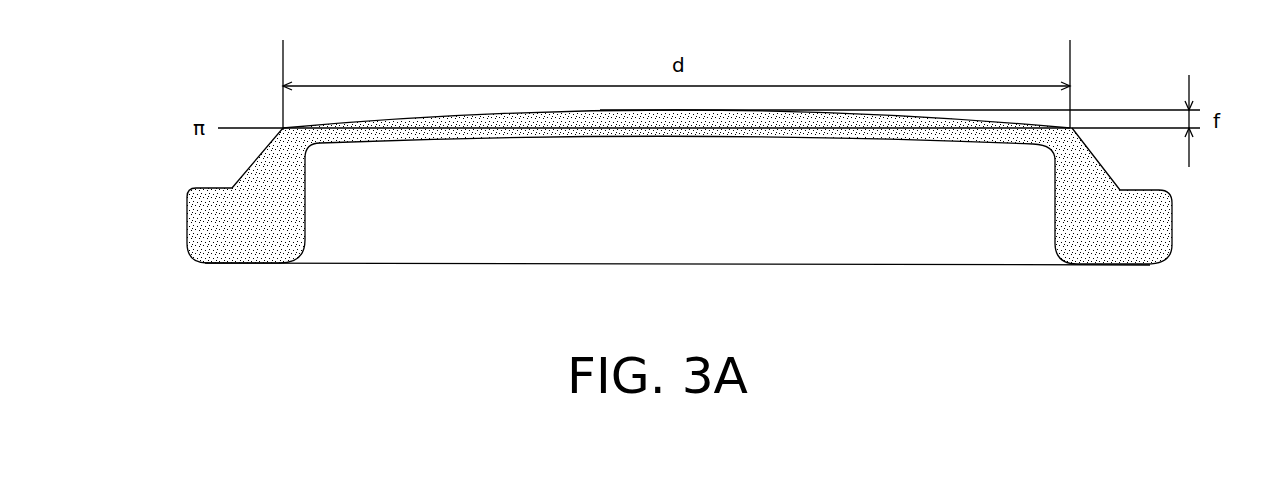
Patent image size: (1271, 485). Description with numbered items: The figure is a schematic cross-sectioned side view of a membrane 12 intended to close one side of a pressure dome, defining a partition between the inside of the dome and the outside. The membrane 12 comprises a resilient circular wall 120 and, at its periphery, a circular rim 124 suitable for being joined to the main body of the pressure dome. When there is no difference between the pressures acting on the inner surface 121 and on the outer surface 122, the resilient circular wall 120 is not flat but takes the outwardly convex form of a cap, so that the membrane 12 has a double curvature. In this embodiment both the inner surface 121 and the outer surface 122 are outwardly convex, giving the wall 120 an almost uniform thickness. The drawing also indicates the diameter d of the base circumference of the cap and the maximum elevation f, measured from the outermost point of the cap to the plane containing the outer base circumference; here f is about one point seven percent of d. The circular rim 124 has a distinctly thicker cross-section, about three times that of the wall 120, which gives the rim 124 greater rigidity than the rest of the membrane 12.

The membrane 12 is at (134, 111).
The resilient circular wall 120 is at (935, 145).
The inner surface 121 is at (468, 142).
The outer surface 122 is at (538, 116).
The circular rim 124 is at (1107, 233).